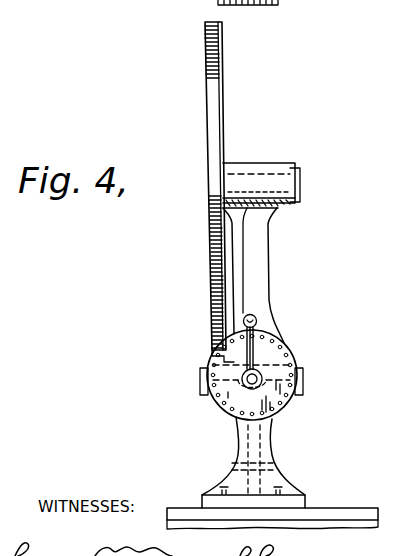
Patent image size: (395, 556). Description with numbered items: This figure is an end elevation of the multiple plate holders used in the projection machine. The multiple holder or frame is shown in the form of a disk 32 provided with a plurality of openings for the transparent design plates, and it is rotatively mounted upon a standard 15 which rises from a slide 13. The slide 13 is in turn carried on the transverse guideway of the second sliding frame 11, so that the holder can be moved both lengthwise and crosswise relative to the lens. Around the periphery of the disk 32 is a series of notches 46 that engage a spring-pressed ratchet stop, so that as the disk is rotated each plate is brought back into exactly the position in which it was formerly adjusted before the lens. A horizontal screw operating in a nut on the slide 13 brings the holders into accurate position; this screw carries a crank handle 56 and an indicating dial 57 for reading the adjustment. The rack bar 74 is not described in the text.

The rack bar 74 is at (208, 86).
The disk 32 is at (222, 119).
The notches 46 is at (219, 50).
The standard 15 is at (265, 220).
The crank handle 56 is at (257, 319).
The indicating dial 57 is at (265, 352).
The slide 13 is at (303, 372).
The second sliding frame 11 is at (334, 508).